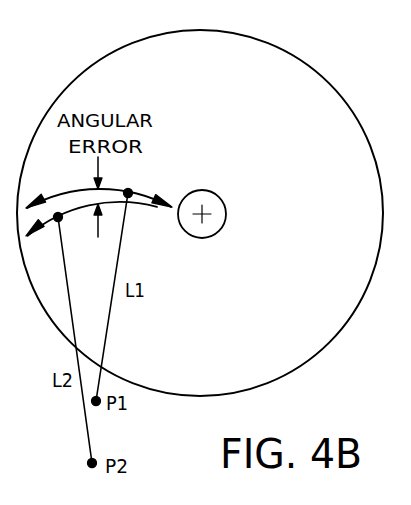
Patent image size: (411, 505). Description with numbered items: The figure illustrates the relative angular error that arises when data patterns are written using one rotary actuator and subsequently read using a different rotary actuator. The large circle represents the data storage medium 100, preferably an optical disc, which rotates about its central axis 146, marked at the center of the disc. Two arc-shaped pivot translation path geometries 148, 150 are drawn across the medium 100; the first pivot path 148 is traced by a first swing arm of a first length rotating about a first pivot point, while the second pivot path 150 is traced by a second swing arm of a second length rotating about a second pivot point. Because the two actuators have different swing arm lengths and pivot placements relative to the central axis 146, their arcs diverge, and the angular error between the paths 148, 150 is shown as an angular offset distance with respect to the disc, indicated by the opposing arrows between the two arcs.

The data storage medium 100 is at (288, 85).
The central axis 146 is at (209, 206).
The first pivot translation path geometry 148 is at (142, 197).
The second pivot translation path geometry 150 is at (138, 207).